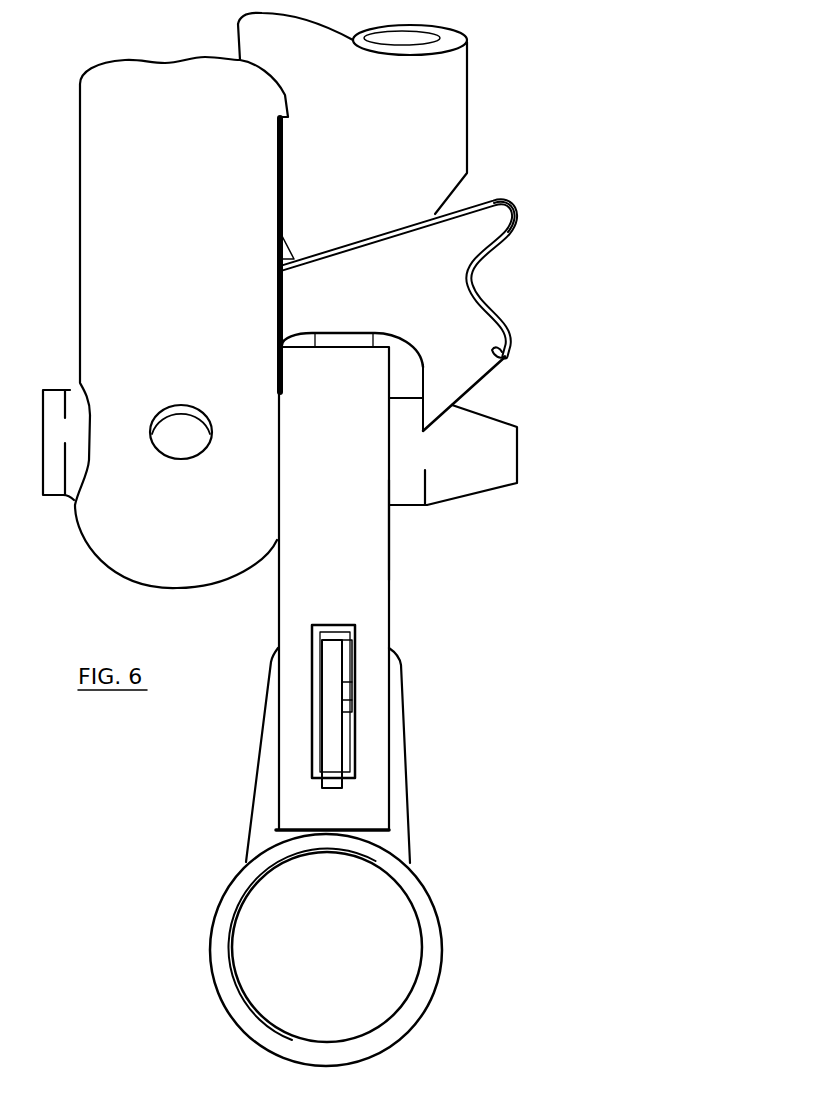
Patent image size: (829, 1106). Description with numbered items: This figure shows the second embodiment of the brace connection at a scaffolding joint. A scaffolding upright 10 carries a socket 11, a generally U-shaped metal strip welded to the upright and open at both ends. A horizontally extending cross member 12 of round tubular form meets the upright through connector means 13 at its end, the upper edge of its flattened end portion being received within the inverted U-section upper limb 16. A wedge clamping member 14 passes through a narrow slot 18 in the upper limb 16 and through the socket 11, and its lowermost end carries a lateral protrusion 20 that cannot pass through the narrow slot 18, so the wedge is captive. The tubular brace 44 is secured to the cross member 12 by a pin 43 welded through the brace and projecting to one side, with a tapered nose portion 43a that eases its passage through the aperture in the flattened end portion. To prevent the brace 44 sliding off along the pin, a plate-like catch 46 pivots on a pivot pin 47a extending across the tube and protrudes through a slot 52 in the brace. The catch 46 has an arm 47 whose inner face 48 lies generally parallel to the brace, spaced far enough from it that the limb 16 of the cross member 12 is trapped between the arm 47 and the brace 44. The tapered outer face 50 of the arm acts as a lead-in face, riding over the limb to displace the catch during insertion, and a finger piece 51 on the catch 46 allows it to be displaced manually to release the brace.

The scaffolding upright 10 is at (210, 923).
The socket 11 is at (258, 758).
The cross member 12 is at (468, 78).
The connector means 13 is at (398, 578).
The wedge clamping member 14 is at (327, 693).
The upper limb 16 is at (378, 531).
The narrow slot 18 is at (357, 745).
The lateral protrusion 20 is at (357, 685).
The pin 43 is at (52, 413).
The tapered nose portion 43a is at (548, 522).
The brace 44 is at (80, 197).
The catch 46 is at (492, 298).
The arm 47 is at (513, 357).
The pivot pin 47a is at (173, 447).
The inner face 48 is at (421, 372).
The outer face 50 is at (475, 381).
The finger piece 51 is at (497, 217).
The slot 52 is at (277, 249).